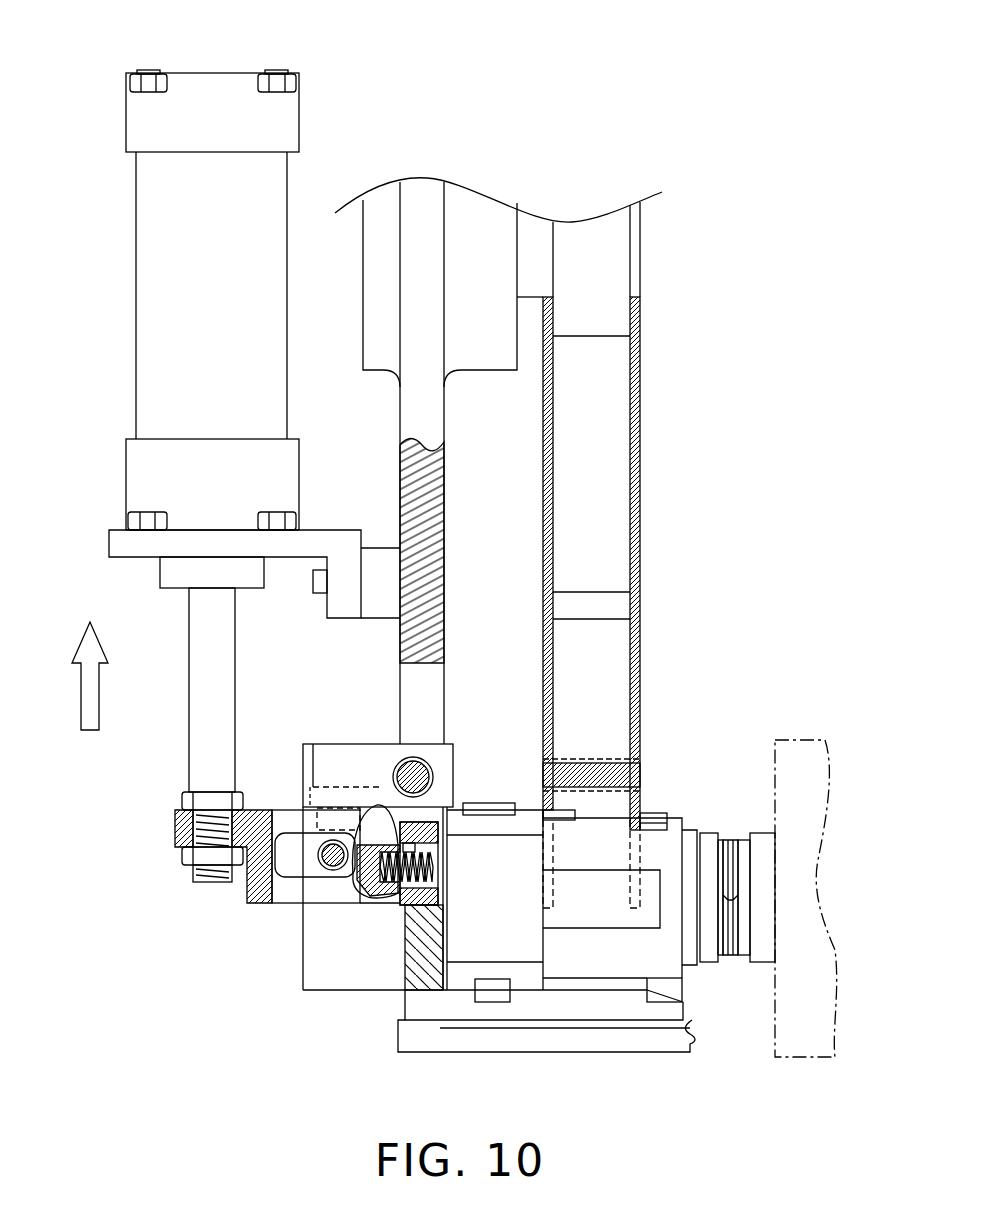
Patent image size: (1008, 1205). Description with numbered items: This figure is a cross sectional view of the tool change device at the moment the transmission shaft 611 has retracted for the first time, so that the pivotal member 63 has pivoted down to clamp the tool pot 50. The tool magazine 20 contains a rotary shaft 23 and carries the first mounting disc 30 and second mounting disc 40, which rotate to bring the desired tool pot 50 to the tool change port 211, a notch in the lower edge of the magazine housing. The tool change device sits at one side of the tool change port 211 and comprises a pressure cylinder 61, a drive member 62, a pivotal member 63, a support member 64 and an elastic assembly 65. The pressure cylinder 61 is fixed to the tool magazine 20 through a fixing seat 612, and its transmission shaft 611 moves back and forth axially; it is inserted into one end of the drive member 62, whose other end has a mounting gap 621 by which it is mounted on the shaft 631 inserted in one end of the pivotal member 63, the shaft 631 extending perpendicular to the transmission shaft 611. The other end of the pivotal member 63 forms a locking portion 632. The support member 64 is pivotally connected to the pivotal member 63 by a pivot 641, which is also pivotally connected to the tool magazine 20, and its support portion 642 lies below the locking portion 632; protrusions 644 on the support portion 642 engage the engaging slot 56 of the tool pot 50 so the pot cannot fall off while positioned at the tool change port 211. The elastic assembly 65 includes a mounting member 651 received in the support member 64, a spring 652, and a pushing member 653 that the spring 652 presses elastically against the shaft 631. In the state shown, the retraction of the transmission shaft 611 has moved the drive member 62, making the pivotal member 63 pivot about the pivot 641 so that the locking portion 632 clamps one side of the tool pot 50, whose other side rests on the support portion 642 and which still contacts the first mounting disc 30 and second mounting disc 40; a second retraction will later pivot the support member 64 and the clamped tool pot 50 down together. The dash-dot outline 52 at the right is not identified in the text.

The tool magazine 20 is at (386, 412).
The rotary shaft 23 is at (373, 315).
The first mounting disc 30 is at (640, 425).
The second mounting disc 40 is at (543, 488).
The tool pot 50 is at (597, 905).
The chuck 52 is at (807, 937).
The engaging slot 56 is at (488, 979).
The pressure cylinder 61 is at (128, 297).
The transmission shaft 611 is at (204, 698).
The fixing seat 612 is at (327, 540).
The drive member 62 is at (235, 888).
The mounting gap 621 is at (298, 845).
The shaft 631 is at (322, 875).
The pivotal member 63 is at (330, 740).
The pivot 641 is at (413, 758).
The support member 64 is at (330, 1010).
The support portion 642 is at (547, 1003).
The protrusions 644 is at (490, 1003).
The elastic assembly 65 is at (383, 898).
The mounting member 651 is at (403, 840).
The spring 652 is at (417, 843).
The pushing member 653 is at (362, 890).
The tool change port 211 is at (653, 800).
The locking portion 632 is at (543, 777).